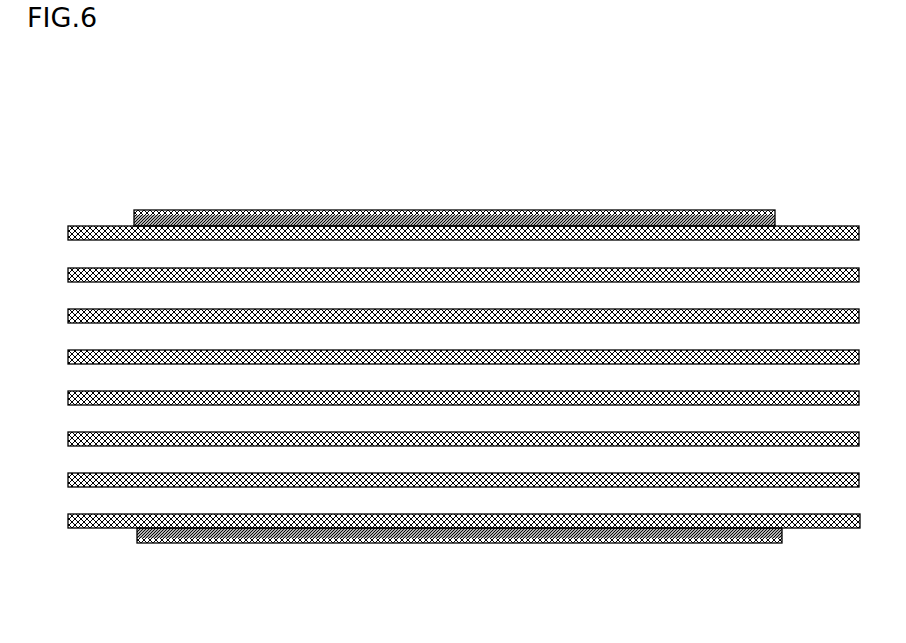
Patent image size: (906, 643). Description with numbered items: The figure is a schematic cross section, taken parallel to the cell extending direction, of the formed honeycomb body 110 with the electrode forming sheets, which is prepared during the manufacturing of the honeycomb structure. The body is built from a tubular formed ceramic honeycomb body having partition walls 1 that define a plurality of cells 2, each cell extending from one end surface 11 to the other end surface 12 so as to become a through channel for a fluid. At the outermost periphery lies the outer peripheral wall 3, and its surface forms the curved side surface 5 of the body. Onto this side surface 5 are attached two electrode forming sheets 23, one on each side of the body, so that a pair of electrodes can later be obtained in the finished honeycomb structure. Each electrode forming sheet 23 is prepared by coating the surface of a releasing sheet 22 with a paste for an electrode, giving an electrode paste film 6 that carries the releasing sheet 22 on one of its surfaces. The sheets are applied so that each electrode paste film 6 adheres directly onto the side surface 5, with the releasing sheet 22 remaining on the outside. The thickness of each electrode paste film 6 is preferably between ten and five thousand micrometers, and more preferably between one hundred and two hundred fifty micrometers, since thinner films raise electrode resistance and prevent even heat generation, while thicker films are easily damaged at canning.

The formed honeycomb body with the electrode forming sheets 110 is at (862, 57).
The partition walls 1 is at (430, 486).
The cells 2 is at (128, 297).
The outer peripheral wall 3 is at (807, 530).
The side surface 5 is at (840, 530).
The electrode paste film 6 is at (134, 221).
The one end surface 11 is at (68, 232).
The other end surface 12 is at (858, 238).
The releasing sheet 22 is at (483, 210).
The electrode forming sheet 23 is at (659, 212).